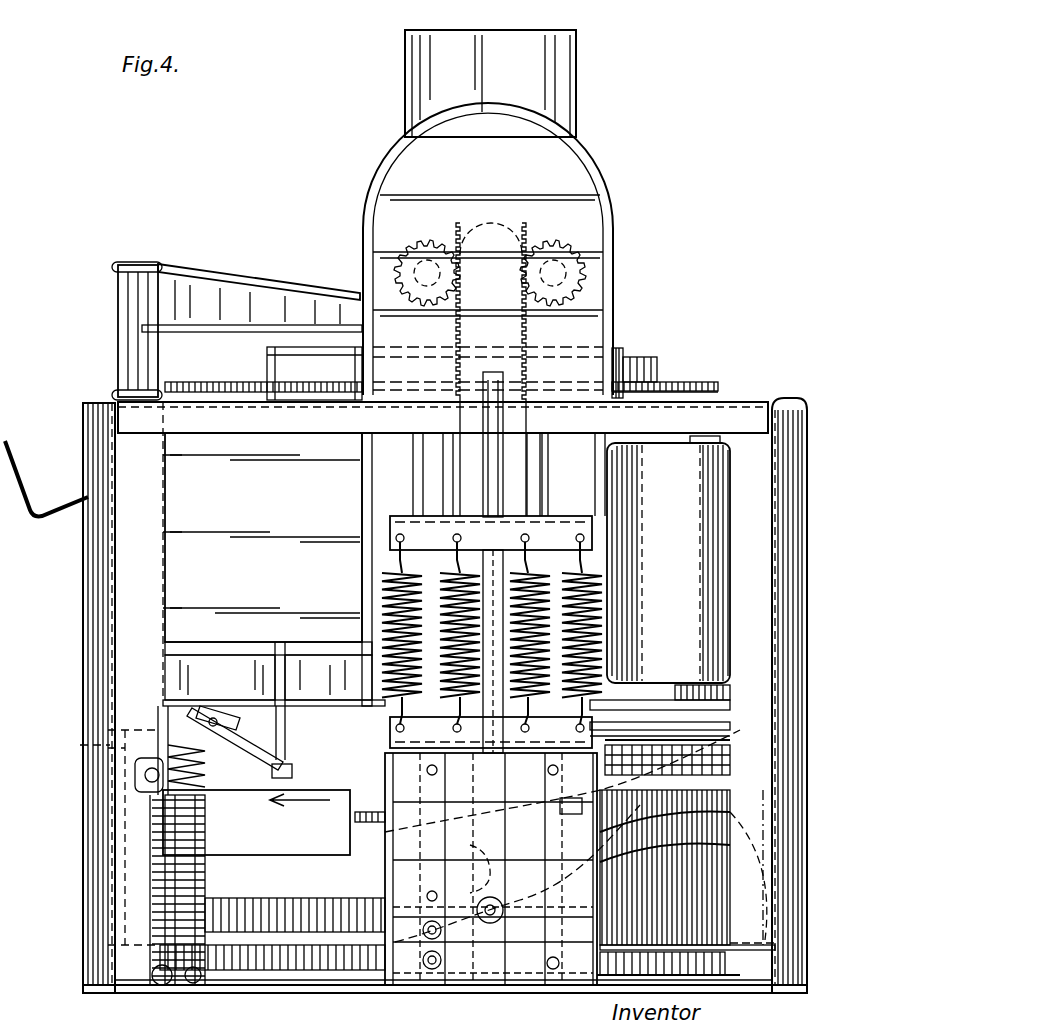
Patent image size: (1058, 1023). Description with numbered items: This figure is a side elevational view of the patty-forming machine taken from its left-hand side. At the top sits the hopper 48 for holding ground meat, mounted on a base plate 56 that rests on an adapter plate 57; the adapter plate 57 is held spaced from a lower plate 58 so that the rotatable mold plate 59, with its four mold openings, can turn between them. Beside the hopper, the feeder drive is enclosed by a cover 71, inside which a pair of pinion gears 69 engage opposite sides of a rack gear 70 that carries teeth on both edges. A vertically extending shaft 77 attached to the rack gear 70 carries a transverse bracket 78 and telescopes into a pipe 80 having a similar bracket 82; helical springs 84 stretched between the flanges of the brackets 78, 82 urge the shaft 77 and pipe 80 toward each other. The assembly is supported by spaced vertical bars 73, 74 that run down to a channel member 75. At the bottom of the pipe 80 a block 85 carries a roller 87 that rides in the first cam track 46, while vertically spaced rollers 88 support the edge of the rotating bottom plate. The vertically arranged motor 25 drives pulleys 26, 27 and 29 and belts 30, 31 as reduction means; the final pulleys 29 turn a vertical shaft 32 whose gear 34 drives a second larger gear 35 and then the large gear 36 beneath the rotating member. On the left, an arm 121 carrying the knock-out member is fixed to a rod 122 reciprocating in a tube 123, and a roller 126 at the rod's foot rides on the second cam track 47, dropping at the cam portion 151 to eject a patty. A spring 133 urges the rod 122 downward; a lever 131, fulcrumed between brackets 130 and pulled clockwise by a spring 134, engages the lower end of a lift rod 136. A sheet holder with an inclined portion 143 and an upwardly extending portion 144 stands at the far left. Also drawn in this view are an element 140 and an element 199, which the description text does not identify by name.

The hopper 48 is at (578, 87).
The cover 71 is at (598, 180).
The rack gear 70 is at (521, 246).
The gears 69 is at (432, 306).
The arm 121 is at (237, 321).
The base plate 56 is at (620, 350).
The adapter plate 57 is at (642, 358).
The lower plate 58 is at (660, 383).
The mold plate 59 is at (700, 383).
The upwardly extending portion 144 is at (12, 453).
The downwardly and outwardly inclined portion 143 is at (62, 510).
The tube 123 is at (105, 549).
The box 140 is at (246, 518).
The bar 73 is at (423, 471).
The shaft 77 is at (492, 482).
The bar 74 is at (560, 473).
The bracket 78 is at (576, 525).
The motor 25 is at (674, 532).
The helical springs 84 is at (590, 644).
The brackets 130 is at (216, 710).
The lift rod 136 is at (285, 683).
The pulley 27 is at (633, 718).
The belt 30 is at (690, 700).
The pulley 26 is at (715, 745).
The bracket 82 is at (398, 736).
The channel member 75 is at (386, 772).
The rod 122 is at (125, 752).
The roller 126 is at (135, 782).
The lever 131 is at (258, 773).
The cam portion 151 is at (358, 796).
The belt 31 is at (712, 772).
The shaft 32 is at (690, 806).
The pulleys 29 is at (615, 772).
The spring 134 is at (210, 796).
The spring 133 is at (200, 820).
The arrow 199 is at (352, 842).
The pipe 80 is at (470, 869).
The block 85 is at (562, 836).
The second cam track 47 is at (321, 885).
The roller 87 is at (503, 922).
The first cam track 46 is at (265, 906).
The rollers 88 is at (392, 942).
The gear 34 is at (722, 967).
The large gear 36 is at (275, 956).
The second larger gear 35 is at (612, 990).